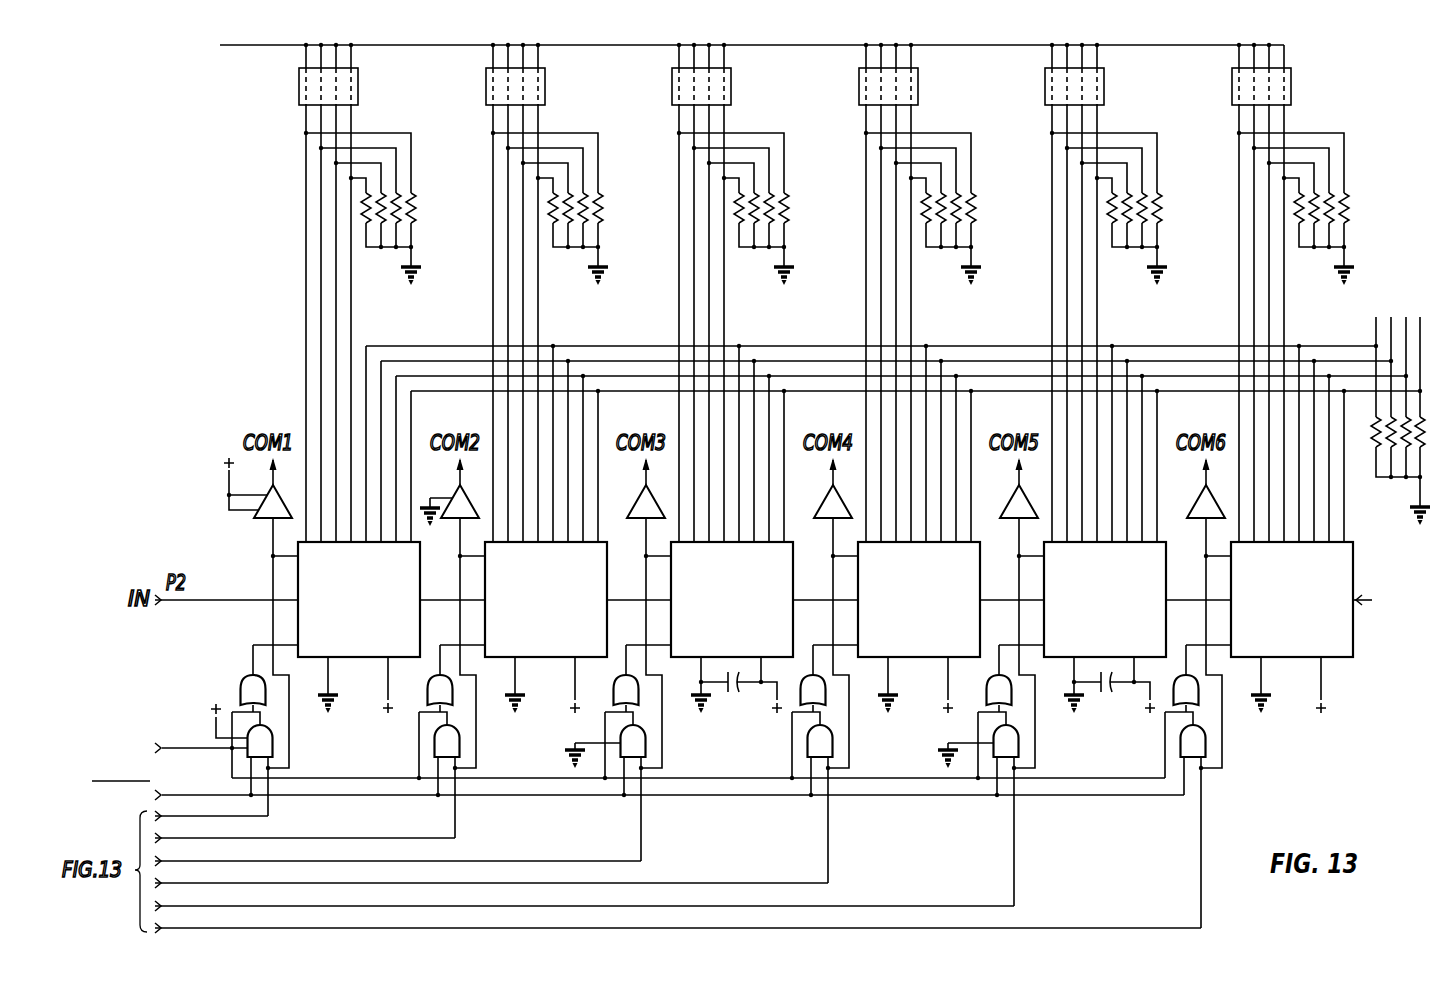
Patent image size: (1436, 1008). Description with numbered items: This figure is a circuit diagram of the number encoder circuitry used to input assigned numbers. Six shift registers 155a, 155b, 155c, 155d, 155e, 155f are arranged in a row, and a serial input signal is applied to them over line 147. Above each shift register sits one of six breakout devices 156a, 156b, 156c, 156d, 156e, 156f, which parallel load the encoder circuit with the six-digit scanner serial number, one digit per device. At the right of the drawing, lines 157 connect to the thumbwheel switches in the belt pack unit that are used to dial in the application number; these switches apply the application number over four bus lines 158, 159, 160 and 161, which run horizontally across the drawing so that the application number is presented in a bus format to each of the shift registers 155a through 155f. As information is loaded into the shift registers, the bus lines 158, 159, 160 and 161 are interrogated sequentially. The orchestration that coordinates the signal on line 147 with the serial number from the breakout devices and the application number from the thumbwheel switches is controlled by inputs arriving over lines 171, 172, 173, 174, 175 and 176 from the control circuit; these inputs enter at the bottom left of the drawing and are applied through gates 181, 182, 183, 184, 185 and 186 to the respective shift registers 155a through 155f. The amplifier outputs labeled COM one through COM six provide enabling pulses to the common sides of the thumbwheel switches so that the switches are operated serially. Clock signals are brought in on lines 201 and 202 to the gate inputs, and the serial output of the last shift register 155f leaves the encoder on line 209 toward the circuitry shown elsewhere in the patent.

The line 147 is at (228, 599).
The shift register 155a is at (339, 637).
The shift register 155b is at (526, 637).
The shift register 155c is at (712, 637).
The shift register 155d is at (899, 637).
The shift register 155e is at (1085, 637).
The shift register 155f is at (1272, 637).
The breakout device 156a is at (299, 80).
The breakout device 156b is at (486, 80).
The breakout device 156c is at (672, 80).
The breakout device 156d is at (918, 78).
The breakout device 156e is at (1104, 78).
The breakout device 156f is at (1291, 78).
The lines 157 is at (1425, 312).
The line 158 is at (1310, 345).
The line 159 is at (1333, 360).
The line 160 is at (1363, 376).
The line 161 is at (1360, 394).
The line 171 is at (270, 805).
The line 172 is at (407, 838).
The line 173 is at (593, 860).
The line 174 is at (765, 882).
The line 175 is at (951, 905).
The line 176 is at (1138, 927).
The gate 181 is at (278, 725).
The gate 182 is at (465, 725).
The gate 183 is at (651, 725).
The gate 184 is at (838, 725).
The gate 185 is at (1024, 725).
The gate 186 is at (1211, 725).
The clock line 201 is at (182, 742).
The inverted clock line 202 is at (212, 793).
The serial output line to FIG. 15 209 is at (1358, 599).